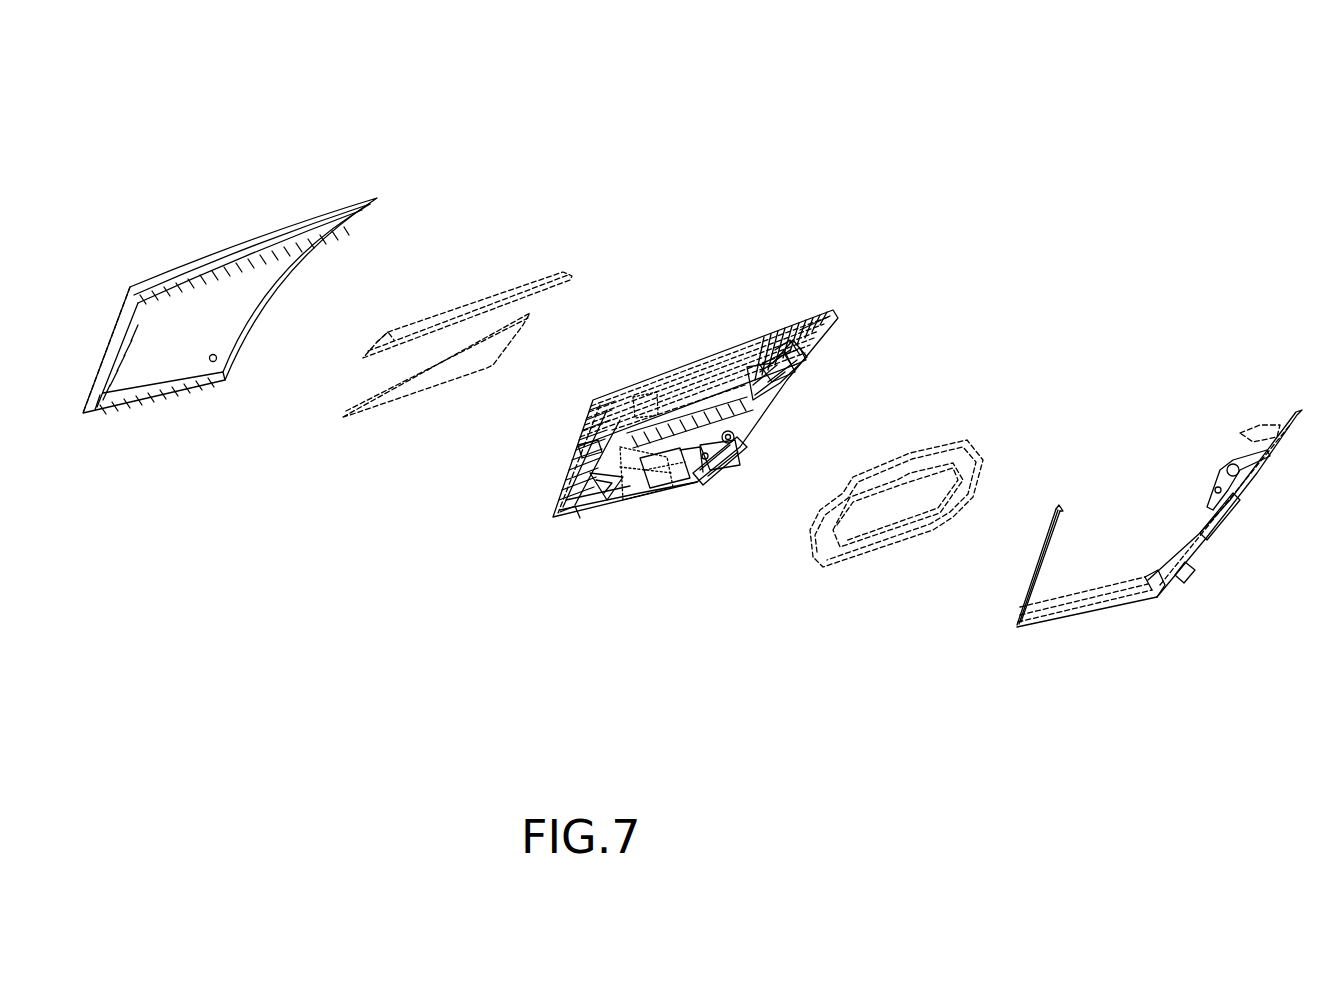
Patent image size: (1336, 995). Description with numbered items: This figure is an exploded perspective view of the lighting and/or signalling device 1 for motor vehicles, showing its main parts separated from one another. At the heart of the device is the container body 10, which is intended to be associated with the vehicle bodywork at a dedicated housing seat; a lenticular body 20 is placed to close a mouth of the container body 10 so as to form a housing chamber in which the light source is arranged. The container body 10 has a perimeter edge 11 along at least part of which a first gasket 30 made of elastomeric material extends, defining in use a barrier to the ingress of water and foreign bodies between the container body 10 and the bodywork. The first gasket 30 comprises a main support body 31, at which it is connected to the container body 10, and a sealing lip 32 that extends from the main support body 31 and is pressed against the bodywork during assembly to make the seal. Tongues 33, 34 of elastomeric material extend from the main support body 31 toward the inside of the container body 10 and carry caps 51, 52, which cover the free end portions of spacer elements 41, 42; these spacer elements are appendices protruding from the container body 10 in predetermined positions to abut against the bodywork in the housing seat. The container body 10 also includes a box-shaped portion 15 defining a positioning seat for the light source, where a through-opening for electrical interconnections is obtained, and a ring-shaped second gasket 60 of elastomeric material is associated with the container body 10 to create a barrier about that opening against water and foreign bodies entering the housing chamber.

The lighting and/or signalling device 1 is at (1017, 120).
The container body 10 is at (526, 510).
The perimeter edge 11 is at (797, 362).
The box-shaped portion 15 is at (677, 483).
The lenticular body 20 is at (142, 418).
The first gasket 30 is at (1113, 524).
The main support body 31 is at (1123, 575).
The sealing lip 32 is at (1227, 523).
The tongue 33 is at (1167, 567).
The tongue 34 is at (1218, 478).
The spacer element 41 is at (722, 470).
The spacer element 42 is at (780, 357).
The cap 51 is at (1172, 585).
The cap 52 is at (1228, 463).
The second gasket 60 is at (838, 572).